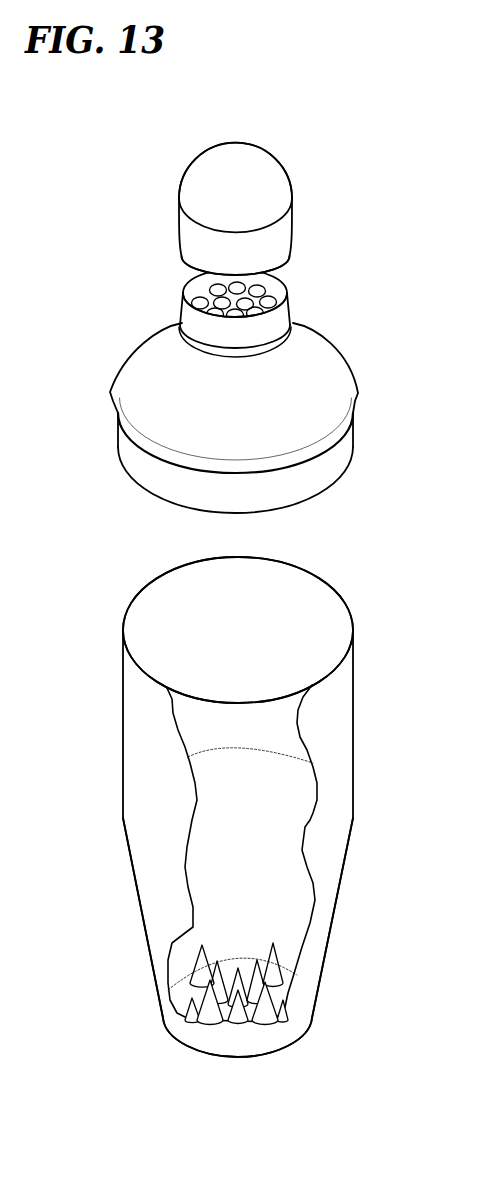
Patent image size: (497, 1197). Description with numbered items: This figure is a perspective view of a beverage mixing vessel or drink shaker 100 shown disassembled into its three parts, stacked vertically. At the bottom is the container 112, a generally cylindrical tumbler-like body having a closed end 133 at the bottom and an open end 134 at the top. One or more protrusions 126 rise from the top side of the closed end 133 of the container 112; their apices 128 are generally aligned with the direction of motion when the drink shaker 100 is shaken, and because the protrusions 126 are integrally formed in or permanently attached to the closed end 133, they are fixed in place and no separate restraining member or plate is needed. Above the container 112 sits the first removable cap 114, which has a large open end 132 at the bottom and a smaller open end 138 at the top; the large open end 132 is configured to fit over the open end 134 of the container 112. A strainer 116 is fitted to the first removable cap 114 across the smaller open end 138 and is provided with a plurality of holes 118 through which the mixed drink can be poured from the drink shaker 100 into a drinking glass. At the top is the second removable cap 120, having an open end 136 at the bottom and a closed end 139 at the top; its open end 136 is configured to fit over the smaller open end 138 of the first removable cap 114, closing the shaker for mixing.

The drink shaker 100 is at (363, 140).
The container 112 is at (121, 711).
The first removable cap 114 is at (117, 377).
The strainer 116 is at (190, 292).
The holes 118 is at (266, 297).
The second removable cap 120 is at (179, 213).
The protrusions 126 is at (151, 955).
The apices 128 is at (143, 918).
The large open end 132 is at (330, 491).
The closed end 133 is at (305, 1038).
The open end 134 is at (340, 586).
The open end 136 is at (172, 255).
The smaller open end 138 is at (289, 271).
The closed end 139 is at (238, 137).